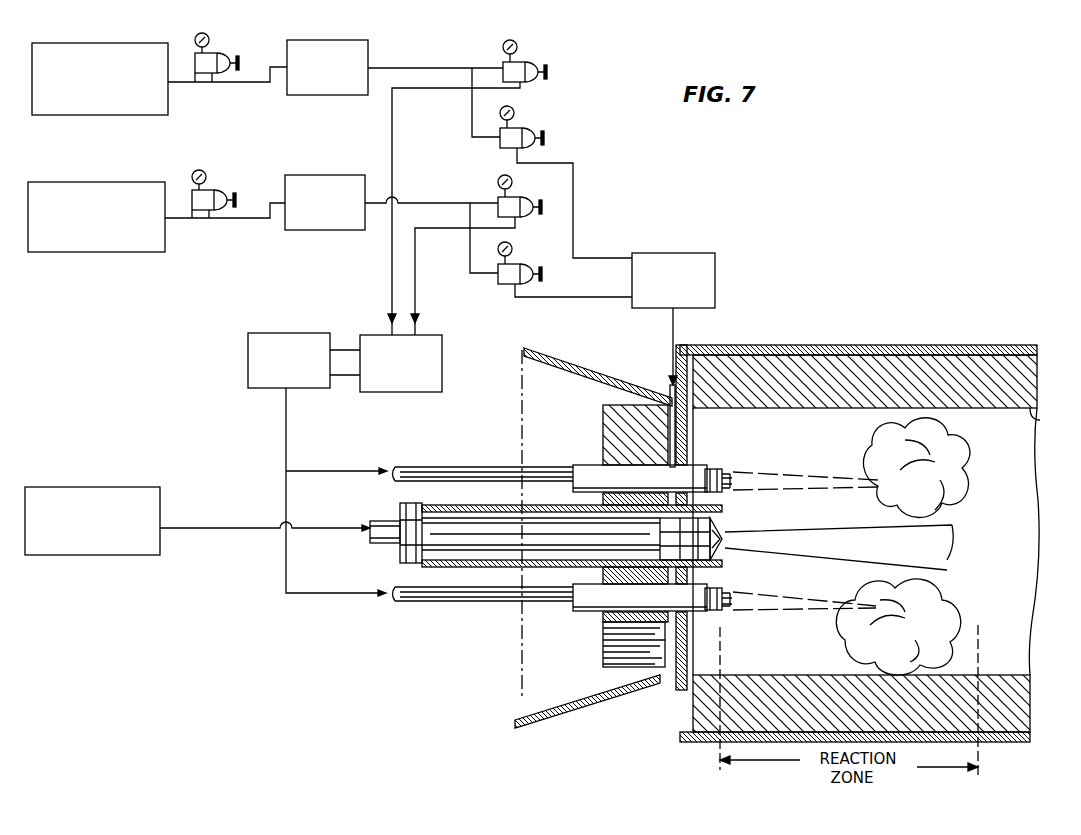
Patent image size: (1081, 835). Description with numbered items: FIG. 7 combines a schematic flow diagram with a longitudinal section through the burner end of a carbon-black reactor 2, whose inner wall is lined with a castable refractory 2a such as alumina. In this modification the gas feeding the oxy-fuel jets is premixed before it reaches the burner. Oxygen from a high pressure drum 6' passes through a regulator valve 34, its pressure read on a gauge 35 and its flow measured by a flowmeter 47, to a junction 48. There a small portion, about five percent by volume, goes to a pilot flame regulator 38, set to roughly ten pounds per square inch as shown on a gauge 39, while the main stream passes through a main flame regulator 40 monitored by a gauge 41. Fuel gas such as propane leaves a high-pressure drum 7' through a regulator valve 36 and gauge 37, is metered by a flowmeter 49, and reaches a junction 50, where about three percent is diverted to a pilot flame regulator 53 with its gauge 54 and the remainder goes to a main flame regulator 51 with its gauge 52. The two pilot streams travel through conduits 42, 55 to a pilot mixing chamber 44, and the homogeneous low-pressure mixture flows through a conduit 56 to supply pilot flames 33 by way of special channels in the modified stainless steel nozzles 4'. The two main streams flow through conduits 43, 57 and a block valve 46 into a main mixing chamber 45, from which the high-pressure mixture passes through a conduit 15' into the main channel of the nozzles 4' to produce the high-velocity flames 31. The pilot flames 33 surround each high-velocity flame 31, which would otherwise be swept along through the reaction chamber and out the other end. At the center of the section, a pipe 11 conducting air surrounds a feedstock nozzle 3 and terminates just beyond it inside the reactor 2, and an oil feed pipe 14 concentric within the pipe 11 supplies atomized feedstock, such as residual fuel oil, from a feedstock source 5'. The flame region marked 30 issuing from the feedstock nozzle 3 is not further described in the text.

The high pressure drum 6' is at (100, 67).
The high-pressure drum 7' is at (96, 228).
The feedstock source 5' is at (92, 534).
The regulator valve 34 is at (215, 51).
The gauge 35 is at (195, 38).
The regulator valve 36 is at (211, 178).
The gauge 37 is at (195, 170).
The flowmeter 47 is at (371, 57).
The flowmeter 49 is at (330, 175).
The junction 48 is at (470, 65).
The main flame regulator 40 is at (535, 60).
The gauge 41 is at (502, 47).
The pilot flame regulator 38 is at (532, 130).
The gauge 39 is at (516, 110).
The conduit 43 is at (393, 148).
The conduit 42 is at (575, 197).
The junction 50 is at (470, 203).
The main flame regulator 51 is at (522, 200).
The gauge 52 is at (497, 185).
The pilot flame regulator 53 is at (507, 285).
The gauge 54 is at (512, 252).
The conduit 57 is at (415, 268).
The conduit 55 is at (574, 298).
The pilot mixing chamber 44 is at (716, 275).
The main mixing chamber 45 is at (248, 350).
The block valve 46 is at (443, 375).
The reactor 2 is at (824, 347).
The castable refractory 2a is at (1034, 418).
The conduit 56 is at (603, 414).
The conduit 15' is at (562, 459).
The modified stainless steel nozzles 4' is at (562, 537).
The feedstock nozzle 3 is at (581, 541).
The pipe 11 is at (728, 520).
The oil feed pipe 14 is at (383, 545).
The high-velocity flames 31 is at (870, 485).
The main flame 30 is at (948, 566).
The pilot flames 33 is at (733, 496).